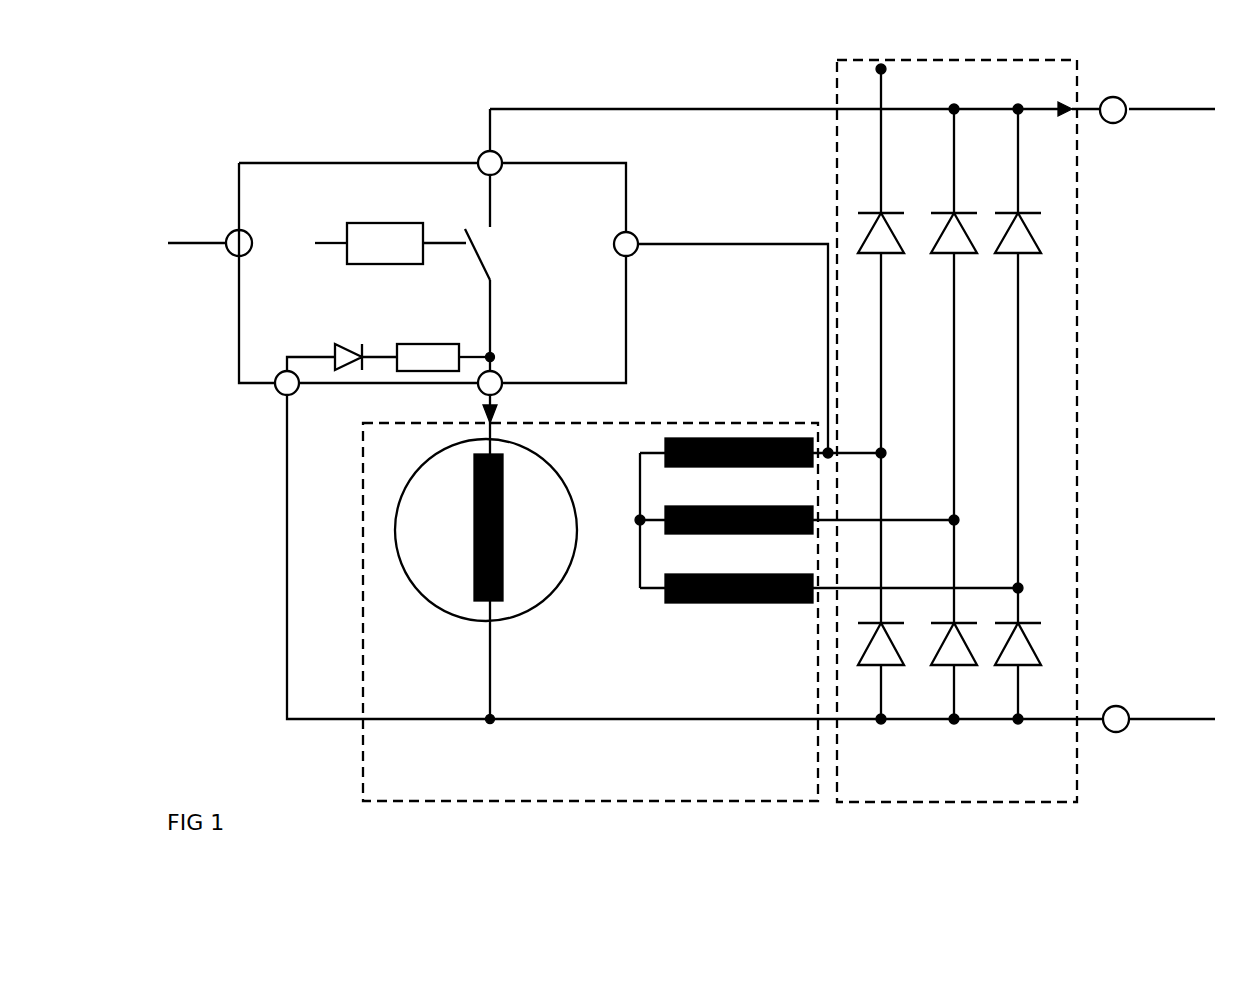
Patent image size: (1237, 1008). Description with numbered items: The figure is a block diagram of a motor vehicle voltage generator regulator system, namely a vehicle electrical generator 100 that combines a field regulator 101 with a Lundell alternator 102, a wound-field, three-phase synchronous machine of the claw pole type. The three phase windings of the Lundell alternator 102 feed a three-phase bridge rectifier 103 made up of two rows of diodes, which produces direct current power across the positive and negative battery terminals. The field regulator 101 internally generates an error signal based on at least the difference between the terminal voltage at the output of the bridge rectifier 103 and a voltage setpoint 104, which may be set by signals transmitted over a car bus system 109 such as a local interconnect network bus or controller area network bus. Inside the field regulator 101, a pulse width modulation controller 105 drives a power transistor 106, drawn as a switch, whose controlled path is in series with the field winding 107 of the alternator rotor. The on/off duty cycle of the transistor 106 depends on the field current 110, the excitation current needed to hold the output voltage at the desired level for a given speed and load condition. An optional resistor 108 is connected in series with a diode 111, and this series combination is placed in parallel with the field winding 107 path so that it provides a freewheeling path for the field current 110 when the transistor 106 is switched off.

The vehicle electrical generator 100 is at (725, 349).
The field regulator 101 is at (368, 163).
The Lundell alternator 102 is at (628, 801).
The 3-phase bridge rectifier 103 is at (970, 802).
The voltage setpoint 104 is at (313, 243).
The pulse width modulation controller 105 is at (400, 223).
The power transistor 106 is at (480, 270).
The field winding 107 is at (474, 514).
The resistor 108 is at (432, 371).
The car bus system 109 is at (210, 255).
The field current 110 is at (500, 414).
The diode 111 is at (345, 365).